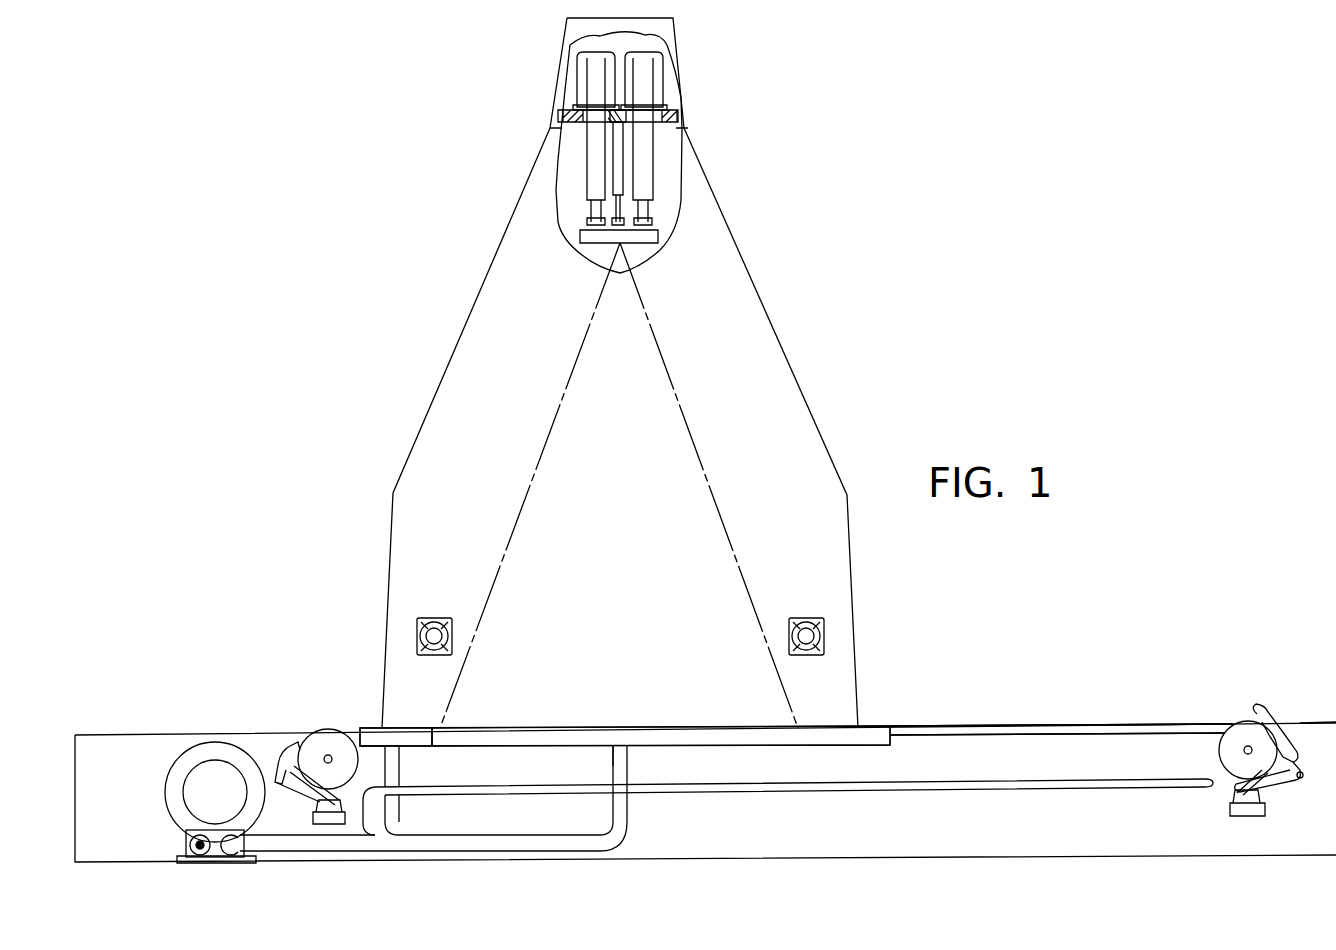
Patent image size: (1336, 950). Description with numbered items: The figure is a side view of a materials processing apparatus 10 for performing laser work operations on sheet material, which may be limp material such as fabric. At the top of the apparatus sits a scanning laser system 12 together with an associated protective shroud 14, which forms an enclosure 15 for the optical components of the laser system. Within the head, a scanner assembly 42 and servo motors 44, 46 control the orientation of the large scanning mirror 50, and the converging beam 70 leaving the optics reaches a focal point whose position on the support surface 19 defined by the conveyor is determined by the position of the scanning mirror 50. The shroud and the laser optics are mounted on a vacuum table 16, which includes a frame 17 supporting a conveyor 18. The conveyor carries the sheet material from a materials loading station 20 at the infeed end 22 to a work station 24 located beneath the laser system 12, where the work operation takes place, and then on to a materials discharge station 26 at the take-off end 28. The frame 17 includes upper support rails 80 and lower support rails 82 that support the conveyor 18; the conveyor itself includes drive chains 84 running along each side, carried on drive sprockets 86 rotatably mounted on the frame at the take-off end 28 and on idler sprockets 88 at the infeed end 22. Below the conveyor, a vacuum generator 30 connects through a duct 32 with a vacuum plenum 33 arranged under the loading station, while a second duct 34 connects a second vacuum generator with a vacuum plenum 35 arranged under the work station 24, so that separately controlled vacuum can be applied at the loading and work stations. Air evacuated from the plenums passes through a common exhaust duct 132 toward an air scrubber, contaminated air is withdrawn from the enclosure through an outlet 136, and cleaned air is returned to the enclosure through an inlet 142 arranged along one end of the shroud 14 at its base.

The materials processing apparatus 10 is at (796, 105).
The scanning laser system 12 is at (546, 106).
The protective shroud 14 is at (476, 300).
The enclosure 15 is at (672, 232).
The vacuum table 16 is at (1048, 706).
The frame 17 is at (1326, 736).
The conveyor 18 is at (951, 725).
The support surface 19 is at (548, 726).
The materials loading station 20 is at (319, 748).
The infeed end 22 is at (240, 720).
The work station 24 is at (700, 740).
The materials discharge station 26 is at (1229, 735).
The take-off end 28 is at (1268, 700).
The vacuum generator 30 is at (176, 775).
The duct 32 is at (283, 851).
The vacuum plenum 33 is at (418, 740).
The duct 34 is at (472, 851).
The vacuum plenum 35 is at (638, 740).
The scanner assembly 42 is at (668, 80).
The servo motor 44 is at (594, 74).
The servo motor 46 is at (648, 92).
The scanning mirror 50 is at (580, 245).
The converging beam 70 is at (548, 420).
The upper support rails 80 is at (1060, 727).
The lower support rails 82 is at (998, 781).
The drive chains 84 is at (1025, 725).
The drive sprockets 86 is at (1232, 770).
The idler sprockets 88 is at (343, 775).
The common exhaust duct 132 is at (186, 845).
The outlet 136 is at (417, 636).
The inlet 142 is at (824, 636).